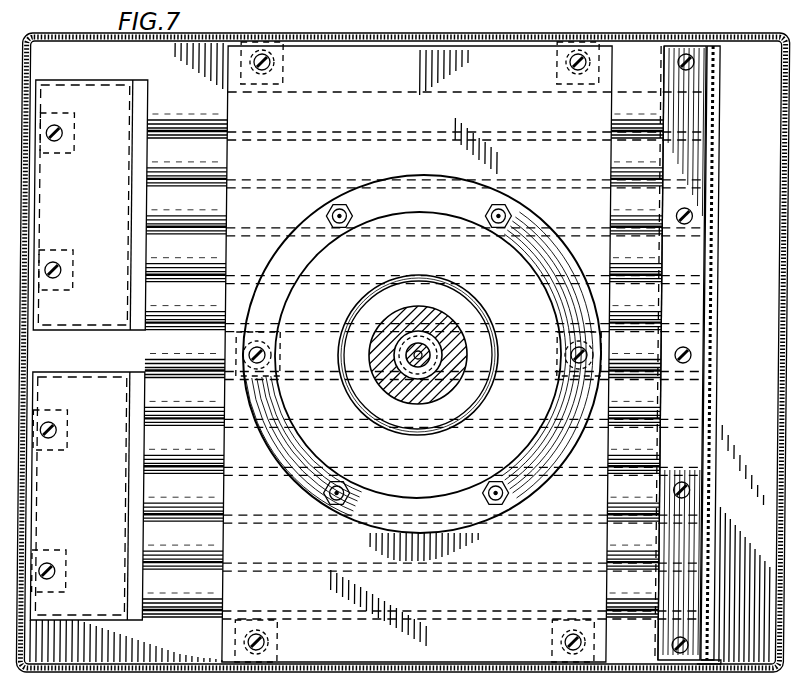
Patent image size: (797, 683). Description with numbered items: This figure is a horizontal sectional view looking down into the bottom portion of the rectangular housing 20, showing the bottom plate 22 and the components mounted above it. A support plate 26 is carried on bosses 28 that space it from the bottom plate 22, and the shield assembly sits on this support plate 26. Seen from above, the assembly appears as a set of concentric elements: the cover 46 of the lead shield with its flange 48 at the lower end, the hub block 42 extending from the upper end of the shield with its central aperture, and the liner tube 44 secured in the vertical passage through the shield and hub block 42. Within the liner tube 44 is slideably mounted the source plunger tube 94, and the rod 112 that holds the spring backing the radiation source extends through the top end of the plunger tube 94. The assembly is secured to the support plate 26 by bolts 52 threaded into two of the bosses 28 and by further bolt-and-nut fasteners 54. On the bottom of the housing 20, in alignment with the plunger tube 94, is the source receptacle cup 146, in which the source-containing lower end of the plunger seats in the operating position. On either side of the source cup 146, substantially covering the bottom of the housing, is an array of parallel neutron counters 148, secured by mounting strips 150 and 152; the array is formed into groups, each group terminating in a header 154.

The rectangular housing 20 is at (666, 27).
The bottom plate 22 is at (768, 223).
The support plate 26 is at (402, 70).
The bosses 28 is at (285, 64).
The hub block 42 is at (383, 318).
The liner tube 44 is at (418, 331).
The cover 46 is at (465, 278).
The flange 48 is at (535, 223).
The bolts 52 is at (567, 357).
The bolt-and-nut fasteners 54 is at (340, 204).
The source plunger tube 94 is at (395, 348).
The rod 112 is at (415, 358).
The source receptacle cup 146 is at (470, 378).
The neutron counters 148 is at (213, 107).
The mounting strip 150 is at (690, 160).
The mounting strip 152 is at (717, 318).
The header 154 is at (110, 224).